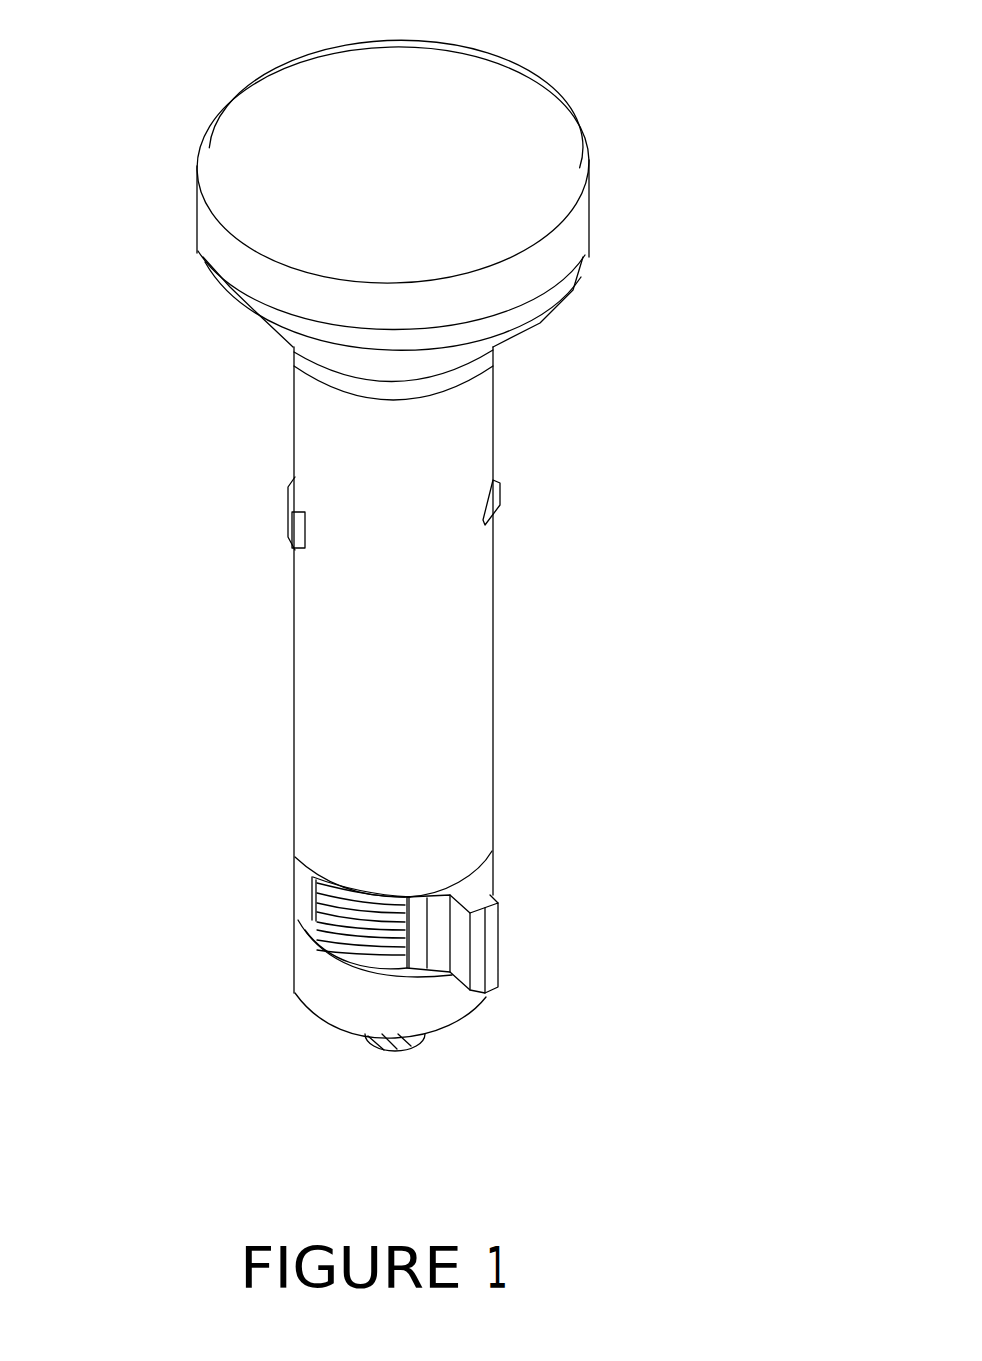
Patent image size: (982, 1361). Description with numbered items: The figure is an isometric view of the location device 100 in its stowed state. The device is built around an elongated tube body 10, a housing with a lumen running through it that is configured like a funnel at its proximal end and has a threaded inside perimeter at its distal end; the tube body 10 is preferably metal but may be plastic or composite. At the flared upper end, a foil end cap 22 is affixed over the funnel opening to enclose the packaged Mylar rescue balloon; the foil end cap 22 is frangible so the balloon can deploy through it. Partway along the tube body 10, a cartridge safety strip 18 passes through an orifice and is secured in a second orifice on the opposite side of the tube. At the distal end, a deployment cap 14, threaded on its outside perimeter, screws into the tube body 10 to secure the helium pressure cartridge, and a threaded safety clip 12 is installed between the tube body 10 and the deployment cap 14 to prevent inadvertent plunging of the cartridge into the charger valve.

The location device 100 is at (657, 68).
The foil end cap 22 is at (268, 190).
The tube body 10 is at (462, 450).
The cartridge safety strip 18 is at (280, 517).
The safety clip 12 is at (477, 900).
The deployment cap 14 is at (363, 1005).